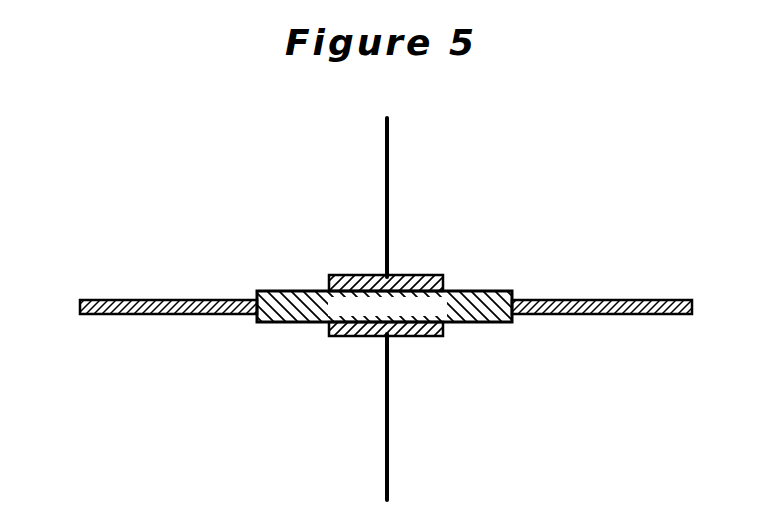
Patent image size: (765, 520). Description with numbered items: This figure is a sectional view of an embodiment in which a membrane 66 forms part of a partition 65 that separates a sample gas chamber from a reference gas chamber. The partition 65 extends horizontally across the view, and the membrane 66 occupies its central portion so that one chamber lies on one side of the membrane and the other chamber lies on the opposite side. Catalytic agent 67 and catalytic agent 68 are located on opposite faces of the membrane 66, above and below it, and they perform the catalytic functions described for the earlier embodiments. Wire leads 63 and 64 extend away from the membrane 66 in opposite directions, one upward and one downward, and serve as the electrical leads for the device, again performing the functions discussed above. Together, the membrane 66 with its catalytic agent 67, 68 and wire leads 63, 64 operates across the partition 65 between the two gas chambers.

The wire lead 63 is at (387, 182).
The wire lead 64 is at (386, 447).
The partition 65 is at (136, 313).
The membrane 66 is at (463, 289).
The catalytic agent 67 is at (355, 336).
The catalytic agent 68 is at (368, 275).